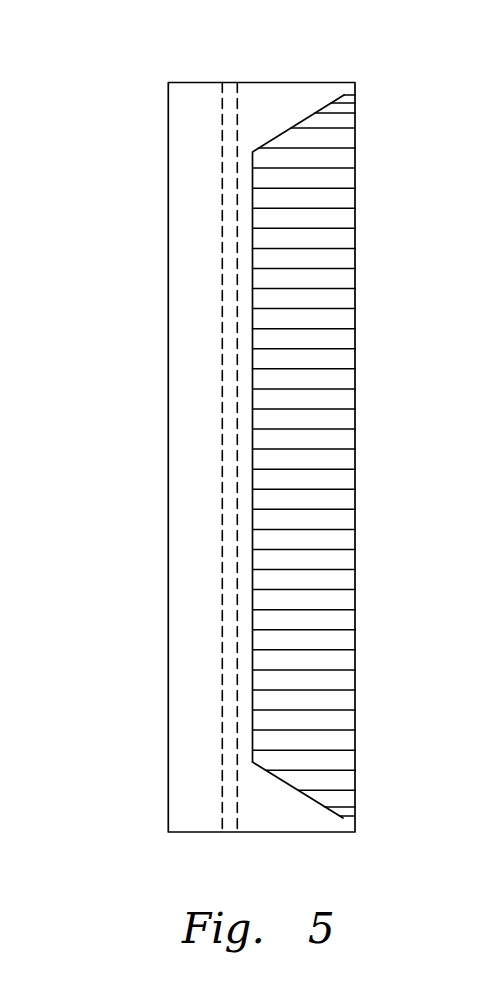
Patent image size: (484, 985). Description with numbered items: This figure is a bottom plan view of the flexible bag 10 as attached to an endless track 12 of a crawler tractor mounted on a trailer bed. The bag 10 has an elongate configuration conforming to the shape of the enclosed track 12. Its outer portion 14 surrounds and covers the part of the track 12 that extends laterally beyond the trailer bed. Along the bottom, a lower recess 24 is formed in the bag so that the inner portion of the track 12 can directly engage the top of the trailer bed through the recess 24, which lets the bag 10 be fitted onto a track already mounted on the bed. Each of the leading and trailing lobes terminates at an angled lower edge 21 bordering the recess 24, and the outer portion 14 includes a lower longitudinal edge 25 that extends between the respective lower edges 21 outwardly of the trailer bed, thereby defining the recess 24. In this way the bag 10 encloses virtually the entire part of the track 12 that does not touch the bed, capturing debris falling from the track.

The flexible bag 10 is at (263, 82).
The endless track 12 is at (333, 458).
The outer portion 14 is at (168, 733).
The angled lower edge 21 is at (295, 787).
The lower recess 24 is at (253, 598).
The lower longitudinal edge 25 is at (253, 277).